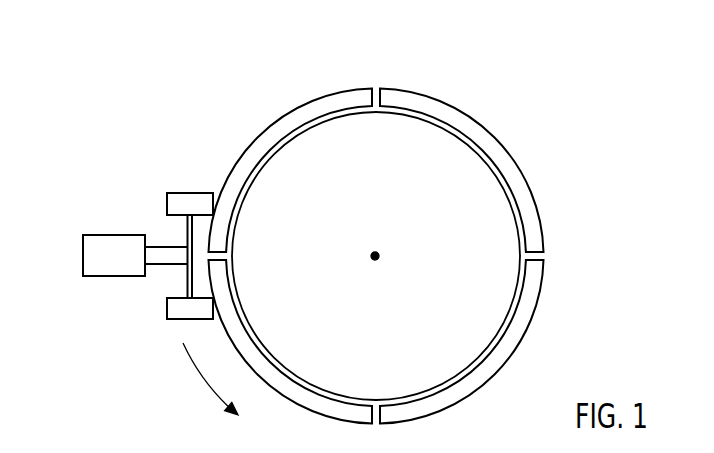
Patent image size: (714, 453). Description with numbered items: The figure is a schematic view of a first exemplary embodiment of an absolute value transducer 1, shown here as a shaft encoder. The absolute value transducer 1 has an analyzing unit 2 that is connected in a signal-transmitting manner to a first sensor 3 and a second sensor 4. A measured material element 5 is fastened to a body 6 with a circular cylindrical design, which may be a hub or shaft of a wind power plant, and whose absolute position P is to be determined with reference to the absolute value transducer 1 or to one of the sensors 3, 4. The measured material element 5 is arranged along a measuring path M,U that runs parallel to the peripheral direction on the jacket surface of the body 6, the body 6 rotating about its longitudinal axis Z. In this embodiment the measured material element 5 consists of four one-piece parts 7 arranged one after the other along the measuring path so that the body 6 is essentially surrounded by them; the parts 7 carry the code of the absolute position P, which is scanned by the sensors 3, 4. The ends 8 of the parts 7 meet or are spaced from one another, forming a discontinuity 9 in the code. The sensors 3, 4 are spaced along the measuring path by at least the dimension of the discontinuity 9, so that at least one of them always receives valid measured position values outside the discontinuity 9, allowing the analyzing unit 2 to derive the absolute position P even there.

The absolute value transducer 1 is at (76, 121).
The analyzing unit 2 is at (83, 255).
The first sensor 3 is at (167, 203).
The second sensor 4 is at (167, 309).
The measured material element 5 is at (572, 158).
The body 6 is at (412, 287).
The part 7 is at (262, 132).
The end 8 is at (371, 89).
The discontinuity 9 is at (379, 66).
The absolute position P is at (170, 86).
The longitudinal axis Z is at (371, 253).
The measuring path and peripheral direction M,U is at (202, 380).